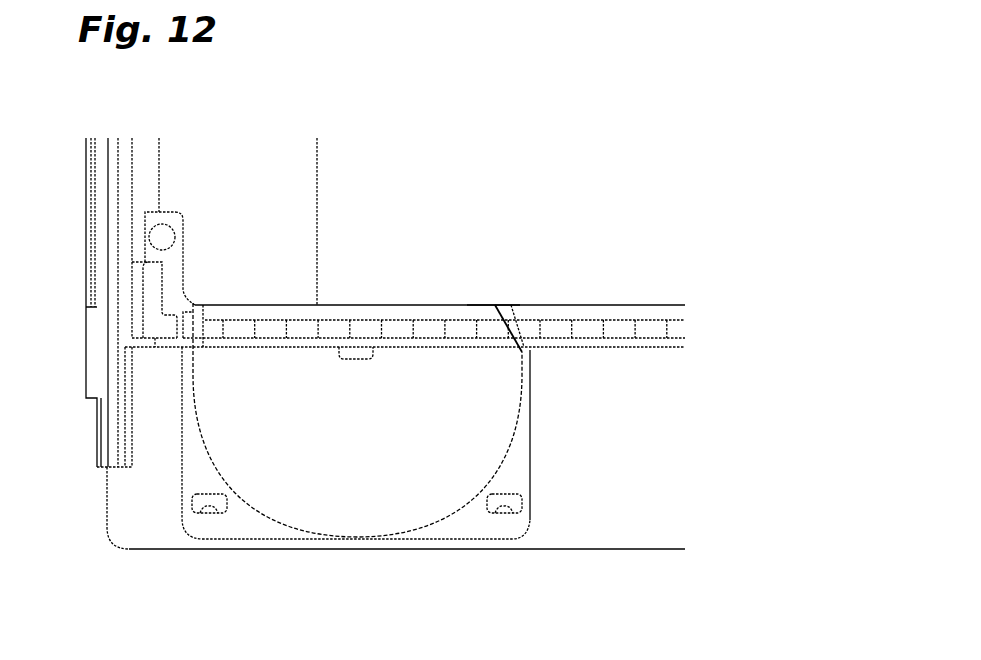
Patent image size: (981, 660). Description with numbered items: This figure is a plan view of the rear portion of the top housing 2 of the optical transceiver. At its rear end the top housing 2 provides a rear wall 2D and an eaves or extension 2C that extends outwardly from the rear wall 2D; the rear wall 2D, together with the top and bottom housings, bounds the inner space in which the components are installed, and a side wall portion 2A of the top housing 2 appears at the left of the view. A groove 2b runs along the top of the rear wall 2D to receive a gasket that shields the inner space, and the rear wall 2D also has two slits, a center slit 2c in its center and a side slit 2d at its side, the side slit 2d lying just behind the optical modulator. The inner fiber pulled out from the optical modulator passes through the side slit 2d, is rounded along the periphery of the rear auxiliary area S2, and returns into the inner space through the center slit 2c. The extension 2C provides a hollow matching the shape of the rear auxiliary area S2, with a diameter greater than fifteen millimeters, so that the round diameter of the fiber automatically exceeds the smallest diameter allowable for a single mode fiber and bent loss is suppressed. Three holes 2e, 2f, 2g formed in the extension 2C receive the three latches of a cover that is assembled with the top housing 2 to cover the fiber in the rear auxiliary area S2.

The top housing 2 is at (490, 163).
The side wall 2A is at (117, 273).
The groove 2b is at (466, 312).
The center slit 2c is at (526, 318).
The side slit 2d is at (198, 305).
The rear wall 2D is at (365, 307).
The hole 2e is at (352, 360).
The hole 2f is at (210, 503).
The hole 2g is at (505, 505).
The extension 2C is at (460, 549).
The rear auxiliary area S2 is at (335, 537).